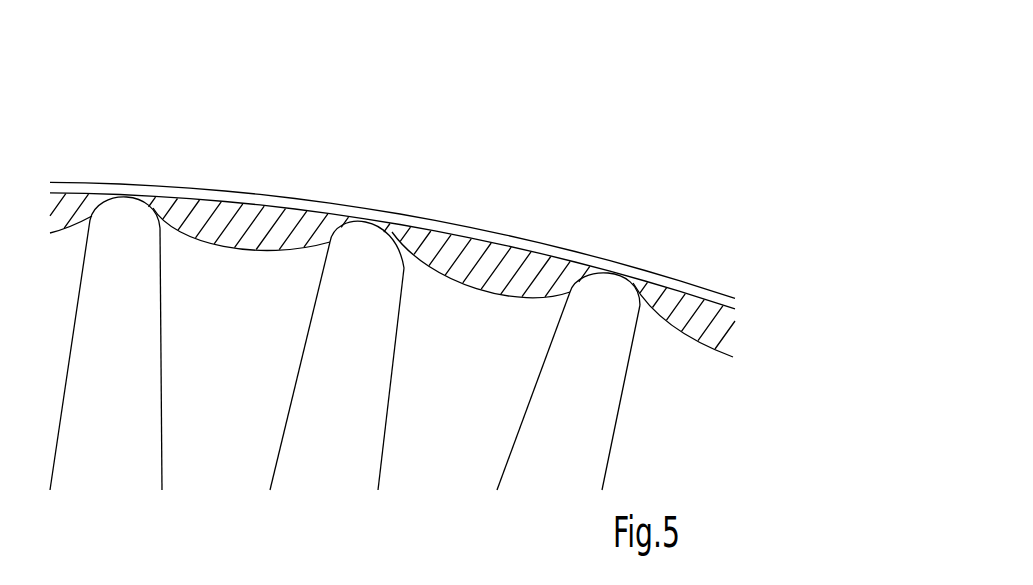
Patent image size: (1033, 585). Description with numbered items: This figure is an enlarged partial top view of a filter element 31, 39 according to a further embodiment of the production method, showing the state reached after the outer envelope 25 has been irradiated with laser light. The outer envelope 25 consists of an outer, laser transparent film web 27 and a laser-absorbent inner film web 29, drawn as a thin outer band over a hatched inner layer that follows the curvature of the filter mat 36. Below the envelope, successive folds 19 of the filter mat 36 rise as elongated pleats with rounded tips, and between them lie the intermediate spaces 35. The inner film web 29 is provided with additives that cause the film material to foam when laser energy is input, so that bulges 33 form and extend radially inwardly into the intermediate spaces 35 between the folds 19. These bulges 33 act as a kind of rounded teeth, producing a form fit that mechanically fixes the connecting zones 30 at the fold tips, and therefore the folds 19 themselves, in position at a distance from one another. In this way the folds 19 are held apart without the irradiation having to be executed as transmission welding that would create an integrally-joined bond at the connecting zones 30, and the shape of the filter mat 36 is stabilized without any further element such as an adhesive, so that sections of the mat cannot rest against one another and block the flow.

The folds 19 is at (163, 365).
The outer envelope 25 is at (262, 192).
The outer, laser transparent film web 27 is at (462, 223).
The laser-absorbent inner film web 29 is at (223, 251).
The connecting zones 30 is at (126, 196).
The filter element 31 is at (615, 140).
The bulges 33 is at (62, 234).
The intermediate spaces 35 is at (235, 429).
The filter mat 36 is at (163, 463).
The filter element 39 is at (670, 584).